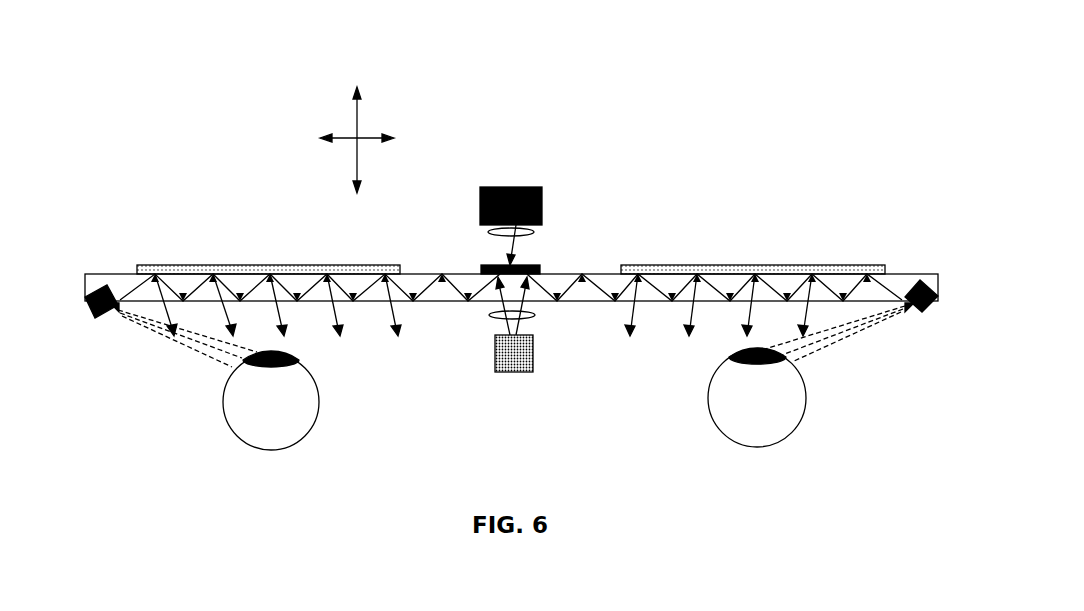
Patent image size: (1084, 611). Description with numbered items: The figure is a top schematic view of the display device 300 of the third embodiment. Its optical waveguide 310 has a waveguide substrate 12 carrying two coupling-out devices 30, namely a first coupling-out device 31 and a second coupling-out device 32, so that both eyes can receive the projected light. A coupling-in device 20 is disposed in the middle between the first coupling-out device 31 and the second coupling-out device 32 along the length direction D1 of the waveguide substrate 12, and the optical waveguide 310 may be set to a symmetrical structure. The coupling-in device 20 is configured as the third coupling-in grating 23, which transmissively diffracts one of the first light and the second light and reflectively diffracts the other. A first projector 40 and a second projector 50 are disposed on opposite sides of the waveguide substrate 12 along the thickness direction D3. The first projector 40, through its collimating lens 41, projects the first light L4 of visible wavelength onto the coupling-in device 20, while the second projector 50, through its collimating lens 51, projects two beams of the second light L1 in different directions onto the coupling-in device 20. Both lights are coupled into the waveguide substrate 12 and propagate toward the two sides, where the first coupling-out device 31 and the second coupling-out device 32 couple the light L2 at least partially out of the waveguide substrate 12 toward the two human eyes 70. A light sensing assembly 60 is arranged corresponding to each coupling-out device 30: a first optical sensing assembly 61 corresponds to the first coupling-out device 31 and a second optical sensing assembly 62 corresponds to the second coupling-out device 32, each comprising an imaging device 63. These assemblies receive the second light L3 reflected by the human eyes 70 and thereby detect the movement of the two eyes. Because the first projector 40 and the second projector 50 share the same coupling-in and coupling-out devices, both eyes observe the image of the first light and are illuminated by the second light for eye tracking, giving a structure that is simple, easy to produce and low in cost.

The display device 300 is at (126, 54).
The waveguide substrate 12 is at (107, 272).
The optical waveguide 310 is at (893, 250).
The coupling-out device 30 is at (511, 234).
The first coupling-out device 31 is at (292, 264).
The second coupling-out device 32 is at (737, 264).
The coupling-in device 20 is at (554, 225).
The third coupling-in grating 23 is at (522, 265).
The first projector 40 is at (508, 187).
The collimating lens 41 is at (488, 232).
The second projector 50 is at (517, 372).
The collimating lens 51 is at (543, 317).
The light sensing assembly 60 is at (508, 330).
The first optical sensing assembly 61 is at (101, 318).
The second optical sensing assembly 62 is at (918, 314).
The imaging device 63 is at (92, 311).
The human eye 70 is at (305, 398).
The second light L1 is at (500, 303).
The coupled-out light L2 is at (337, 318).
The reflected second light L3 is at (196, 352).
The first light L4 is at (505, 243).
The length direction D1 is at (376, 141).
The thickness direction D3 is at (360, 125).